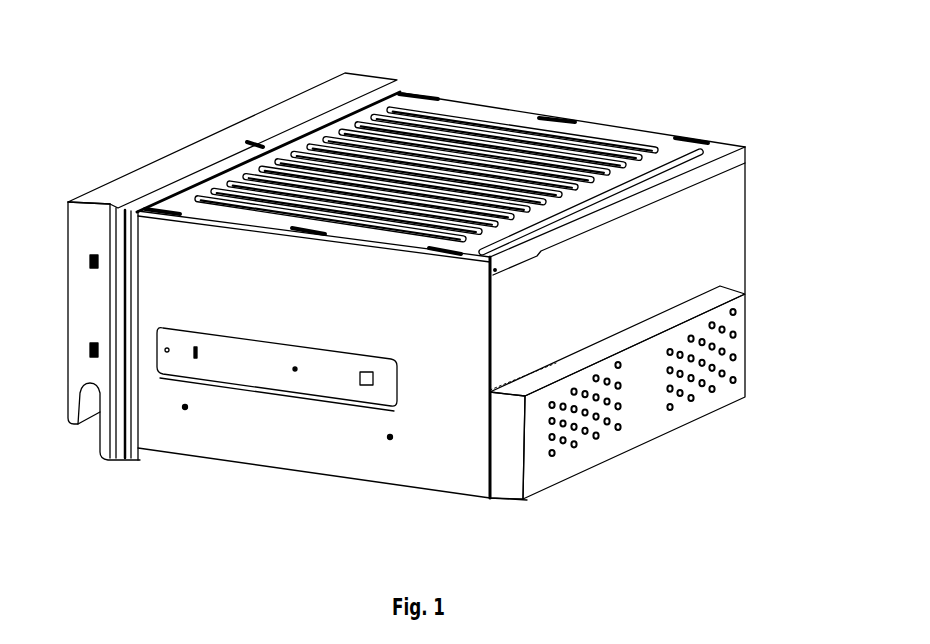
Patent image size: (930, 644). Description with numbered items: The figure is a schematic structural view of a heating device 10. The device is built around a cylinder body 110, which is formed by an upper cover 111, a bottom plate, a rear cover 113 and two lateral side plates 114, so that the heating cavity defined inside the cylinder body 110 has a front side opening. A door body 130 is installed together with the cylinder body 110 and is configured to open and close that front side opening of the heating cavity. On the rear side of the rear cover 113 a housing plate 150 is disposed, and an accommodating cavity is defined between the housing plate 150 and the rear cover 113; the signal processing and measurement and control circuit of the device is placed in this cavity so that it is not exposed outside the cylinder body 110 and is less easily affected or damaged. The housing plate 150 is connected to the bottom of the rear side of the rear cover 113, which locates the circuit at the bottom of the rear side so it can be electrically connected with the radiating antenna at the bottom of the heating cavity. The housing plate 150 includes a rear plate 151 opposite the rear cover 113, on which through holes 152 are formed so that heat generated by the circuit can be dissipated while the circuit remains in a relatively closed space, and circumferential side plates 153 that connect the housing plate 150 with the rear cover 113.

The heating device 10 is at (68, 48).
The cylinder body 110 is at (618, 114).
The upper cover 111 is at (490, 120).
The rear cover 113 is at (720, 224).
The lateral side plate 114 is at (336, 465).
The door body 130 is at (80, 194).
The housing plate 150 is at (758, 333).
The rear plate 151 is at (649, 427).
The through holes 152 is at (710, 385).
The circumferential side plates 153 is at (505, 480).